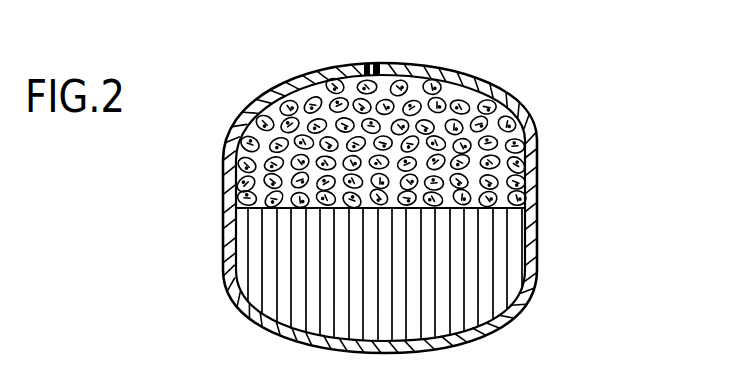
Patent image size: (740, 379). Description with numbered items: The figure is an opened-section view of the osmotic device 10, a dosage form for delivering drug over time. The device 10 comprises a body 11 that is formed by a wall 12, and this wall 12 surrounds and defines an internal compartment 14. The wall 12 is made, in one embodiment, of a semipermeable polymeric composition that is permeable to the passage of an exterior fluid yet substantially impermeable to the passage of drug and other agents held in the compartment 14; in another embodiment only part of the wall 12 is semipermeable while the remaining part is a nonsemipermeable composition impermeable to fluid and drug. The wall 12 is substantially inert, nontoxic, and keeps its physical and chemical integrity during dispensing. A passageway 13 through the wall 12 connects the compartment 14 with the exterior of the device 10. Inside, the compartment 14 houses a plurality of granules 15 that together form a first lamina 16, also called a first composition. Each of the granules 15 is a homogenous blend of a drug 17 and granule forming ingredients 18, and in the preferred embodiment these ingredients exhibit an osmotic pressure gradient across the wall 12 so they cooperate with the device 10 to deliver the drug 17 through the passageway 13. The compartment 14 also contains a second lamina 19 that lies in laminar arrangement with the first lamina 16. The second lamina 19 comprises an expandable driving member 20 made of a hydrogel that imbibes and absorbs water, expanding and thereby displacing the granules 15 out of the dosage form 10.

The osmotic device 10 is at (532, 72).
The body 11 is at (537, 125).
The wall 12 is at (538, 147).
The passageway 13 is at (380, 62).
The internal compartment 14 is at (538, 168).
The granules 15 is at (283, 110).
The first lamina 16 is at (537, 188).
The drug 17 is at (252, 130).
The granule forming ingredients 18 is at (250, 160).
The second lamina 19 is at (243, 232).
The expandable driving member 20 is at (247, 262).